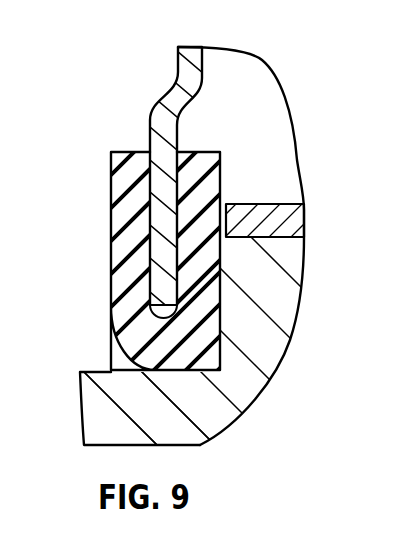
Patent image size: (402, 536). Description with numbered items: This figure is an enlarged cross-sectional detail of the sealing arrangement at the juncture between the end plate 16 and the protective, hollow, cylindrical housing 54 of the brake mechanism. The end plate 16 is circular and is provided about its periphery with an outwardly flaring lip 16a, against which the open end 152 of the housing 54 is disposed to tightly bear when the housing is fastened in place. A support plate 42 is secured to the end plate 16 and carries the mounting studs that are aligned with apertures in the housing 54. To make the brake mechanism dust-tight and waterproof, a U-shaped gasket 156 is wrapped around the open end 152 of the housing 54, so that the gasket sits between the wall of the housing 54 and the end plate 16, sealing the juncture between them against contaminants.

The end plate 16 is at (286, 283).
The outwardly flaring lip 16a is at (77, 377).
The support plate 42 is at (287, 204).
The housing 54 is at (167, 105).
The open end 152 is at (160, 292).
The U-shaped gasket 156 is at (120, 221).